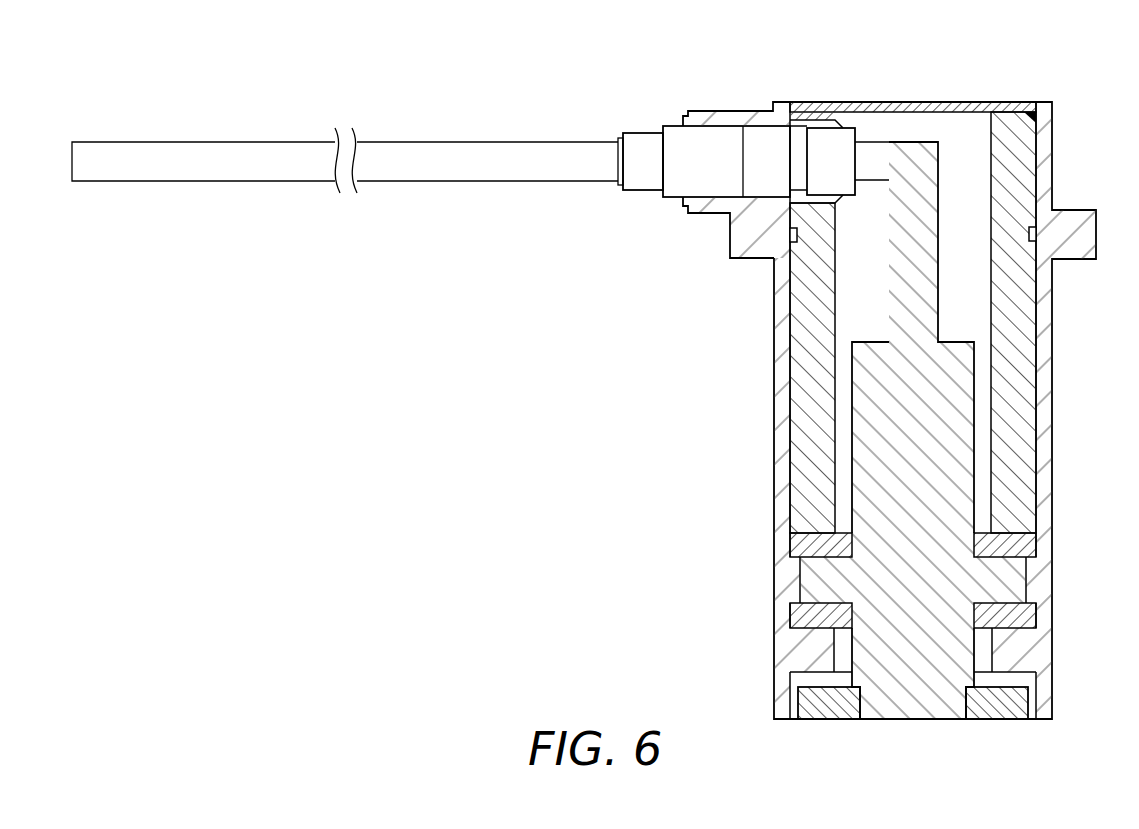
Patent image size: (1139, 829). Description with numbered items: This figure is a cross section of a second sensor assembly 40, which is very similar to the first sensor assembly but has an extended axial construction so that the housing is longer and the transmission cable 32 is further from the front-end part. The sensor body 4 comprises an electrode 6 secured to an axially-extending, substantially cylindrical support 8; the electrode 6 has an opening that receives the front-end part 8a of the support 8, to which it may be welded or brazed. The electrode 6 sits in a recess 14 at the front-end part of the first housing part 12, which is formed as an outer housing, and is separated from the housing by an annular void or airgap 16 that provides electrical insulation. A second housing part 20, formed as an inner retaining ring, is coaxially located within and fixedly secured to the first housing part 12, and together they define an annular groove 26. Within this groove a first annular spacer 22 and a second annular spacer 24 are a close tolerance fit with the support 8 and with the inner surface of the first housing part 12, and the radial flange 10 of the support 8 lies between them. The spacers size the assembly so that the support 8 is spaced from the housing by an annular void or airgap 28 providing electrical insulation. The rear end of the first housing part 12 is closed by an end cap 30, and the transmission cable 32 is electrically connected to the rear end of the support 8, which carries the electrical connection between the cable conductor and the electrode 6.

The transmission cable 32 is at (456, 78).
The end cap 30 is at (913, 102).
The second housing part 20 is at (1024, 148).
The annular void or airgap 28 is at (843, 370).
The support 8 is at (958, 368).
The sensor body 4 is at (958, 425).
The second sensor assembly 40 is at (713, 443).
The first housing part 12 is at (783, 511).
The second annular spacer 24 is at (1024, 540).
The radial flange 10 is at (1013, 569).
The annular groove 26 is at (1030, 596).
The first annular spacer 22 is at (800, 614).
The recess 14 is at (1030, 679).
The annular void or airgap 16 is at (796, 720).
The front-end part 8a is at (917, 720).
The electrode 6 is at (1000, 720).